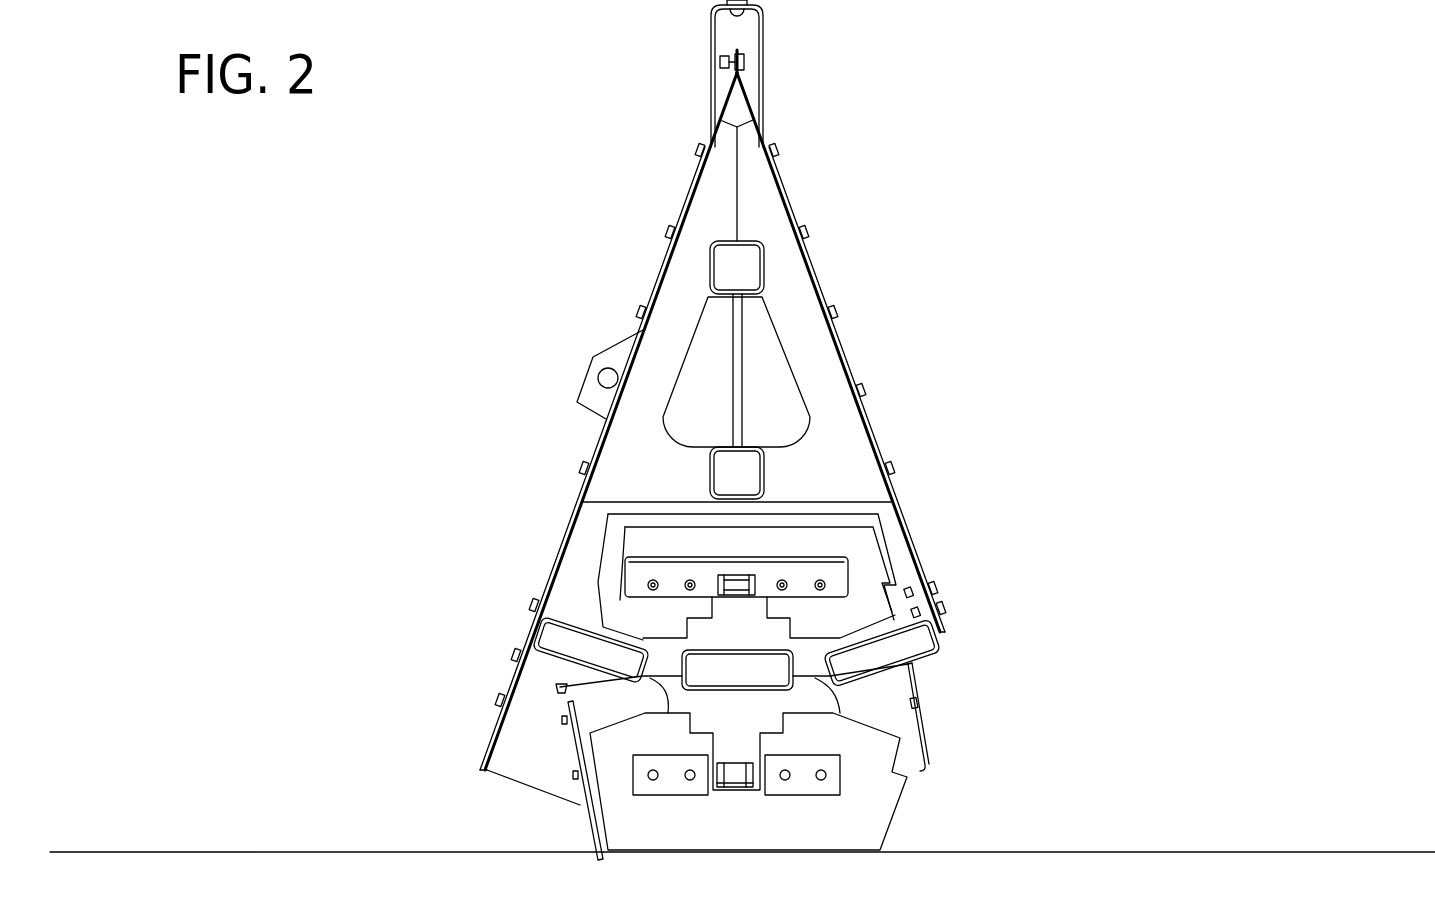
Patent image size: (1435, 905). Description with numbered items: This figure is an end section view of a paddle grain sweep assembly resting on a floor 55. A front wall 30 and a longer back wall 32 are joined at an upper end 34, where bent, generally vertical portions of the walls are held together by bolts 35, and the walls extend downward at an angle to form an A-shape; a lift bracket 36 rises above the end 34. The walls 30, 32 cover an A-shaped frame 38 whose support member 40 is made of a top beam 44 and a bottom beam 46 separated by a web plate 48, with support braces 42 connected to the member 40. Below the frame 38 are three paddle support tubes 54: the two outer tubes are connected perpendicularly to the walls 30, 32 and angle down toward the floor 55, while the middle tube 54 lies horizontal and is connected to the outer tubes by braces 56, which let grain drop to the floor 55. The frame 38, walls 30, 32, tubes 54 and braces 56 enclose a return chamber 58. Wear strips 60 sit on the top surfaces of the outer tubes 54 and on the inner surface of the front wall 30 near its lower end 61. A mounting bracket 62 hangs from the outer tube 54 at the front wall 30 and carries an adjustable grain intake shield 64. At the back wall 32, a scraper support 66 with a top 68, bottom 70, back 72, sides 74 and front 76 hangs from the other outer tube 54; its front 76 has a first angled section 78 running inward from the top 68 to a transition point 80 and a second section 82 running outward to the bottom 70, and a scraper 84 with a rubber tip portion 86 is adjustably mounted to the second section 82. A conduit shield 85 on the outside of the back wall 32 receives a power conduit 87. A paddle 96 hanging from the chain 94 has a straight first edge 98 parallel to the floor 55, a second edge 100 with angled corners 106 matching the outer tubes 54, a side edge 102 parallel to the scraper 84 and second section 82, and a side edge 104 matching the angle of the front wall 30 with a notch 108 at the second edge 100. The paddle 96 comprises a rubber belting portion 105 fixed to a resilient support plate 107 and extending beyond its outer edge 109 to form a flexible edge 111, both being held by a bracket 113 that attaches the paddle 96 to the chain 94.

The front wall 30 is at (797, 192).
The back wall 32 is at (683, 183).
The end 34 is at (742, 58).
The bolts 35 is at (720, 62).
The lift bracket 36 is at (765, 25).
The A-shaped frame 38 is at (820, 387).
The support member 40 is at (750, 357).
The support braces 42 is at (840, 445).
The top beam 44 is at (765, 270).
The bottom beam 46 is at (765, 480).
The web plate 48 is at (742, 420).
The paddle support tubes 54 is at (880, 650).
The floor 55 is at (1178, 838).
The braces 56 is at (652, 682).
The return chamber 58 is at (587, 565).
The wear strips 60 is at (915, 557).
The lower end 61 is at (942, 633).
The mounting bracket 62 is at (915, 670).
The grain intake shield 64 is at (925, 727).
The scraper support 66 is at (535, 700).
The top 68 is at (540, 660).
The bottom 70 is at (503, 780).
The back 72 is at (495, 748).
The sides 74 is at (575, 782).
The front 76 is at (562, 698).
The first angled section 78 is at (585, 648).
The transition point 80 is at (556, 684).
The second section 82 is at (572, 700).
The scraper 84 is at (585, 812).
The conduit shield 85 is at (620, 338).
The rubber tip portion 86 is at (597, 843).
The power conduit 87 is at (597, 375).
The chain 94 is at (740, 582).
The paddles 96 is at (873, 820).
The first edge 98 is at (702, 852).
The second edge 100 is at (688, 703).
The side edge 102 is at (607, 813).
The side edge 104 is at (895, 797).
The portion 105 is at (898, 580).
The angled corners 106 is at (920, 703).
The support plate 107 is at (867, 548).
The notch 108 is at (900, 765).
The outer edge 109 is at (865, 532).
The flexible edge 111 is at (852, 518).
The bracket 113 is at (672, 572).